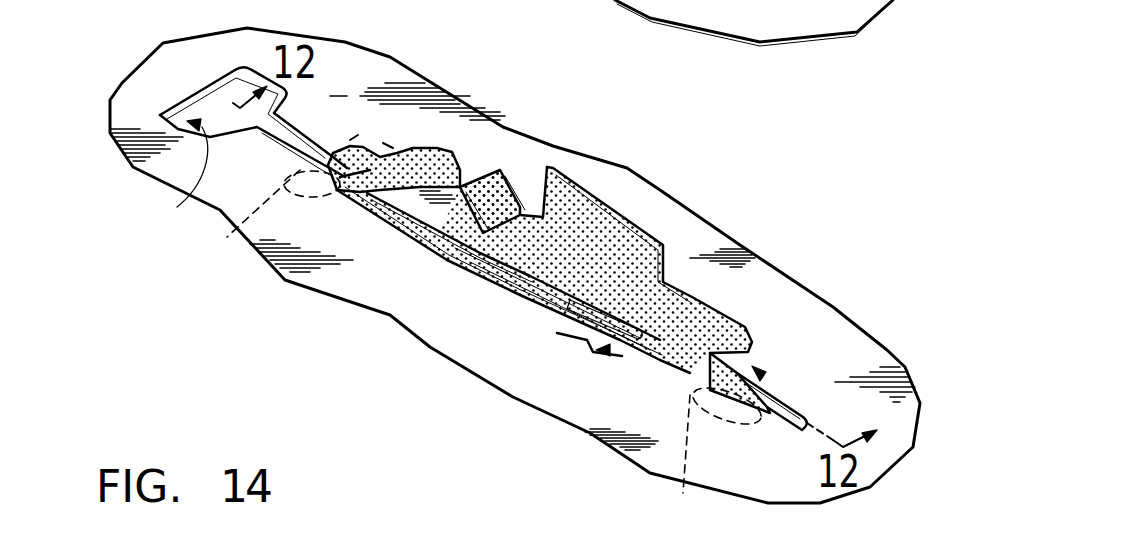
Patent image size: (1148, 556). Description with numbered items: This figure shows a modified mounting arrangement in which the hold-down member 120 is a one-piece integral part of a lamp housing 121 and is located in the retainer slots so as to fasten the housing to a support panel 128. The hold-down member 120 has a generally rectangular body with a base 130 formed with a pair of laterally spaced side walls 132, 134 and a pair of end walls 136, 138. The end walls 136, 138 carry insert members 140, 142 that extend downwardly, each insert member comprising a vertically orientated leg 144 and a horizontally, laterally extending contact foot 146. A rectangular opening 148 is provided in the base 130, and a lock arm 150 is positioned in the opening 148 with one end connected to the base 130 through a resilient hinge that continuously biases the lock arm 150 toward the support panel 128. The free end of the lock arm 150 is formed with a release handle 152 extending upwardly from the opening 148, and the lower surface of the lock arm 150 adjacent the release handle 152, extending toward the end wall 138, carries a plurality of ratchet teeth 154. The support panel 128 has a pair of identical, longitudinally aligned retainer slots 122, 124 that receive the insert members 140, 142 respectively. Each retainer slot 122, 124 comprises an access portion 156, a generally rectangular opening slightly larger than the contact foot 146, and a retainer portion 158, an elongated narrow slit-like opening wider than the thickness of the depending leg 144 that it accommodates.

The hold-down member 120 is at (463, 272).
The lamp housing 121 is at (607, 213).
The retainer slot 122 is at (166, 175).
The retainer slot 124 is at (613, 350).
The support panel 128 is at (822, 326).
The base 130 is at (732, 320).
The side wall 132 is at (547, 308).
The side wall 134 is at (717, 305).
The end wall 136 is at (413, 153).
The end wall 138 is at (664, 447).
The insert member 140 is at (405, 90).
The insert member 142 is at (808, 357).
The leg 144 is at (371, 146).
The contact foot 146 is at (471, 346).
The rectangular opening 148 is at (462, 186).
The lock arm 150 is at (550, 252).
The release handle 152 is at (500, 172).
The ratchet teeth 154 is at (525, 300).
The access portion 156 is at (210, 102).
The retainer portion 158 is at (298, 137).